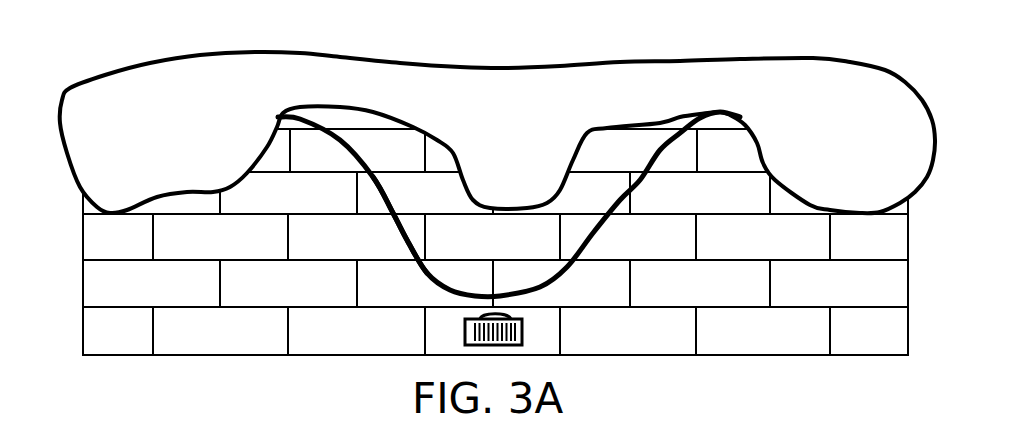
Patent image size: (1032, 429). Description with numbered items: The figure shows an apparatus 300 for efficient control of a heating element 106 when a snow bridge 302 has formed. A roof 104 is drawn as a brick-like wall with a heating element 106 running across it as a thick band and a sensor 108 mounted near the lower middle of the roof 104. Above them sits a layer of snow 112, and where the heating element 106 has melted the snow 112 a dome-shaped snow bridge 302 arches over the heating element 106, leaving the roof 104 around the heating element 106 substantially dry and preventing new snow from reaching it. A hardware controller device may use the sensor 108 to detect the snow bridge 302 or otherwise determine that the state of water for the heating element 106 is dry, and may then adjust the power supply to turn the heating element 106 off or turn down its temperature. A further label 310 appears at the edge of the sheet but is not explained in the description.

The apparatus 300 is at (120, 28).
The snow 112 is at (106, 81).
The snow bridge 302 is at (317, 106).
The heating element 106 is at (400, 234).
The roof 104 is at (104, 289).
The sensor 108 is at (465, 326).
The reference 310 is at (56, 424).